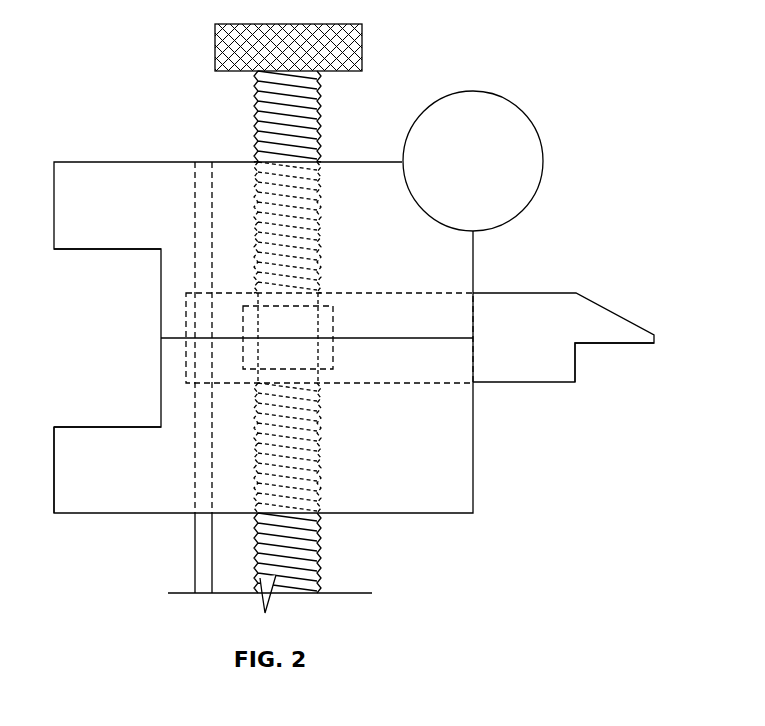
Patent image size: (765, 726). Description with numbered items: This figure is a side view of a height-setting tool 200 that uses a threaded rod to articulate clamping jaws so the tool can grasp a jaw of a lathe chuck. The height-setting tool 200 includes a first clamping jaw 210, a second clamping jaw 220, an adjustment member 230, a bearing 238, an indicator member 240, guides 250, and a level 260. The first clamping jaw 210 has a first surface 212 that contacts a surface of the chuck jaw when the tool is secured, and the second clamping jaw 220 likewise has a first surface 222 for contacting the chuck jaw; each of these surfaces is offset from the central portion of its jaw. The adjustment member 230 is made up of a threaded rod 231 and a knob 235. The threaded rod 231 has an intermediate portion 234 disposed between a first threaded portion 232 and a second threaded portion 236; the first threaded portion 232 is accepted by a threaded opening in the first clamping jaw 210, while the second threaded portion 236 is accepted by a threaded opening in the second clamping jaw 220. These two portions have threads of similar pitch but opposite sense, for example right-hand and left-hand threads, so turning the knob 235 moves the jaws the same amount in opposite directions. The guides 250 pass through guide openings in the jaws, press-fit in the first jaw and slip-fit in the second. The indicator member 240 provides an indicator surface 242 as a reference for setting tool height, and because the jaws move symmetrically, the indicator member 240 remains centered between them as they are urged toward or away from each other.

The height-setting tool 200 is at (522, 63).
The first clamping jaw 210 is at (83, 235).
The first surface 212 is at (148, 252).
The second clamping jaw 220 is at (82, 443).
The first surface 222 is at (151, 424).
The adjustment member 230 is at (292, 342).
The threaded rod 231 is at (320, 114).
The first threaded portion 232 is at (258, 110).
The intermediate portion 234 is at (318, 301).
The knob 235 is at (362, 45).
The second threaded portion 236 is at (318, 523).
The bearing 238 is at (324, 356).
The indicator member 240 is at (548, 305).
The indicator surface 242 is at (603, 345).
The guides 250 is at (193, 551).
The level 260 is at (517, 153).